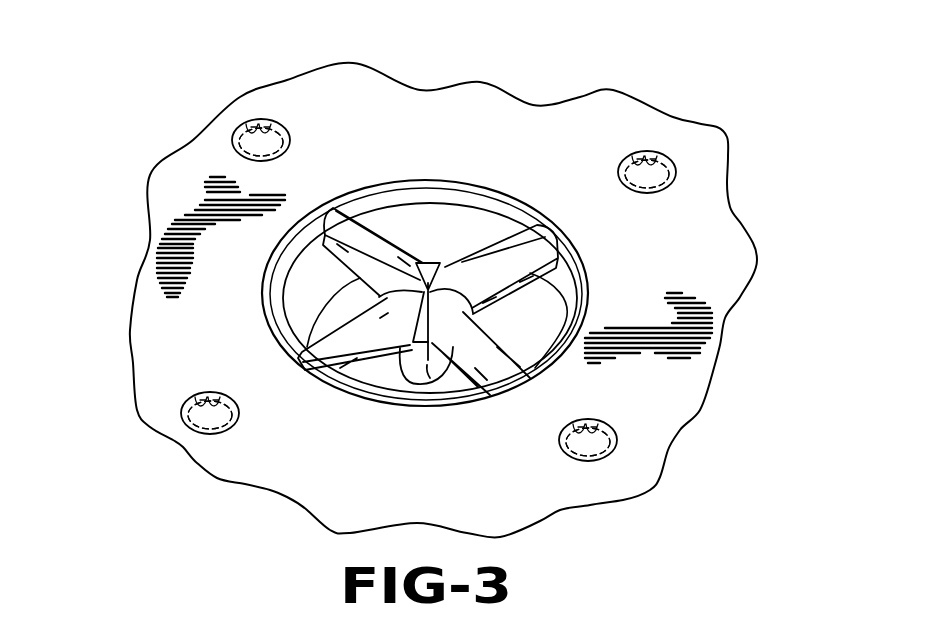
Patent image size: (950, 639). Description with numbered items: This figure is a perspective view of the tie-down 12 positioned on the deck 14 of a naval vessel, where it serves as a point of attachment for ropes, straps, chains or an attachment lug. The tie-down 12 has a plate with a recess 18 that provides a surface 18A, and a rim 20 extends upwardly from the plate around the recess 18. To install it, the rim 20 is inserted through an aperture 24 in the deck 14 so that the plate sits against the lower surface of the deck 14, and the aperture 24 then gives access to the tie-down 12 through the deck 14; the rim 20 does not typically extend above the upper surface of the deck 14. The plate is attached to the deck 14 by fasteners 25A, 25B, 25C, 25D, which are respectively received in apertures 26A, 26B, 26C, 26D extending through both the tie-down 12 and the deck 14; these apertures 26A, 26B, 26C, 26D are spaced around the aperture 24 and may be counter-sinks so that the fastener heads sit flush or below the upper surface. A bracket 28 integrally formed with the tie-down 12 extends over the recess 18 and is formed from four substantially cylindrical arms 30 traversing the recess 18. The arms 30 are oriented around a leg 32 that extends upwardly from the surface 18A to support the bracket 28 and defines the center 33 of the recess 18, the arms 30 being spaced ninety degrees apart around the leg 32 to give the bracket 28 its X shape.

The tie-down 12 is at (353, 389).
The deck 14 is at (324, 112).
The recess 18 is at (303, 303).
The surface 18A is at (373, 380).
The rim 20 is at (465, 362).
The aperture 24 is at (420, 405).
The fastener 25A is at (257, 121).
The fastener 25B is at (196, 398).
The fastener 25C is at (613, 431).
The fastener 25D is at (650, 151).
The aperture 26A is at (243, 157).
The aperture 26B is at (196, 432).
The aperture 26C is at (605, 453).
The aperture 26D is at (664, 184).
The bracket 28 is at (372, 220).
The arms 30 is at (428, 301).
The leg 32 is at (430, 378).
The center 33 is at (441, 278).